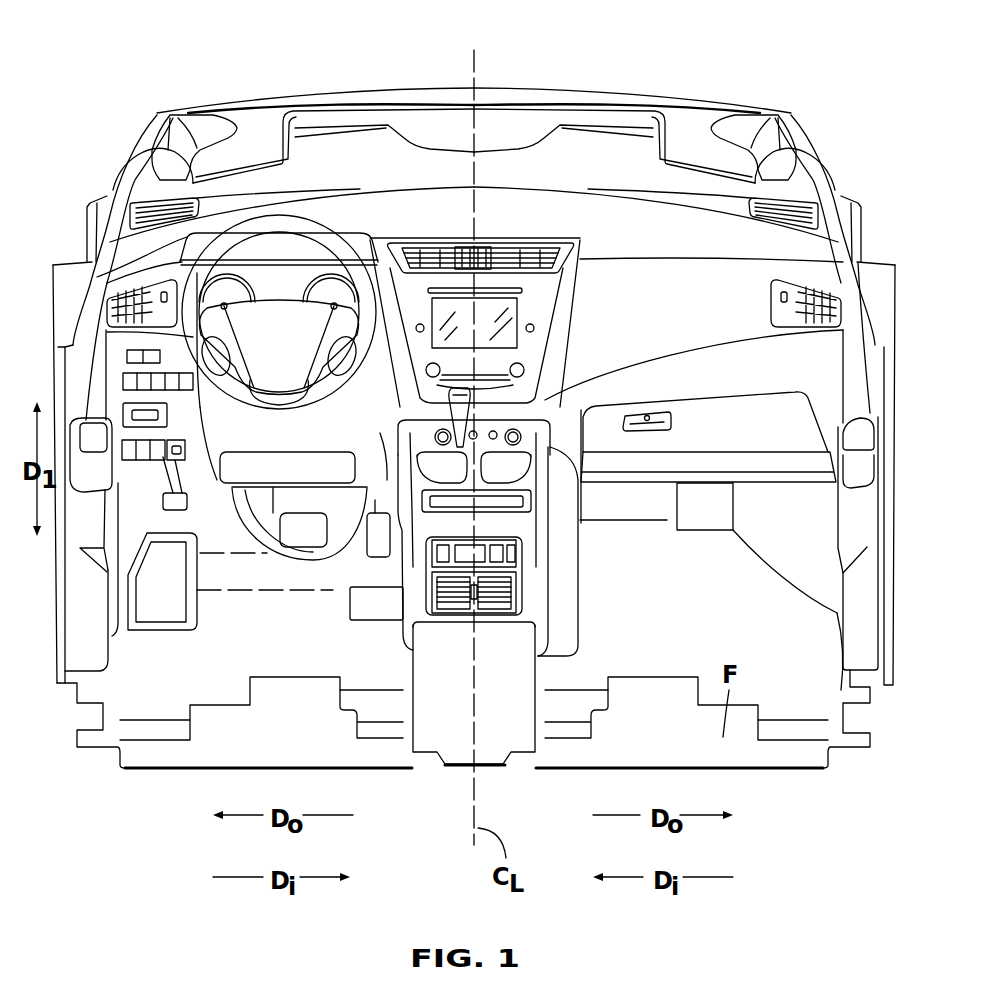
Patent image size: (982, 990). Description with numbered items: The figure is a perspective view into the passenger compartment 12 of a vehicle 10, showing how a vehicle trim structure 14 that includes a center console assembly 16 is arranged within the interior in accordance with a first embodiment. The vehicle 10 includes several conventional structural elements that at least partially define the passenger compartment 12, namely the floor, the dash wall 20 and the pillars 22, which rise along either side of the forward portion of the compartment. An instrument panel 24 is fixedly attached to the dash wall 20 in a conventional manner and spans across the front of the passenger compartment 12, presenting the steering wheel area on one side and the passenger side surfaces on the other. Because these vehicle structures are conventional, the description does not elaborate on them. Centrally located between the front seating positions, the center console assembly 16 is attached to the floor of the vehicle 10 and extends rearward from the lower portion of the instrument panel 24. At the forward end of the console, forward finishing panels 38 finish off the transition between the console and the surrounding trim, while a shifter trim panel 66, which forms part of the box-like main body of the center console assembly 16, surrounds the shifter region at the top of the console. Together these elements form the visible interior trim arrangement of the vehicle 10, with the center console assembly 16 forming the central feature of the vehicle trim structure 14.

The vehicle 10 is at (218, 60).
The passenger compartment 12 is at (596, 157).
The vehicle trim structure 14 is at (584, 607).
The center console assembly 16 is at (424, 762).
The dash wall 20 is at (648, 503).
The pillars 22 is at (113, 186).
The instrument panel 24 is at (660, 290).
The forward finishing panels 38 is at (367, 500).
The shifter trim panel 66 is at (523, 450).